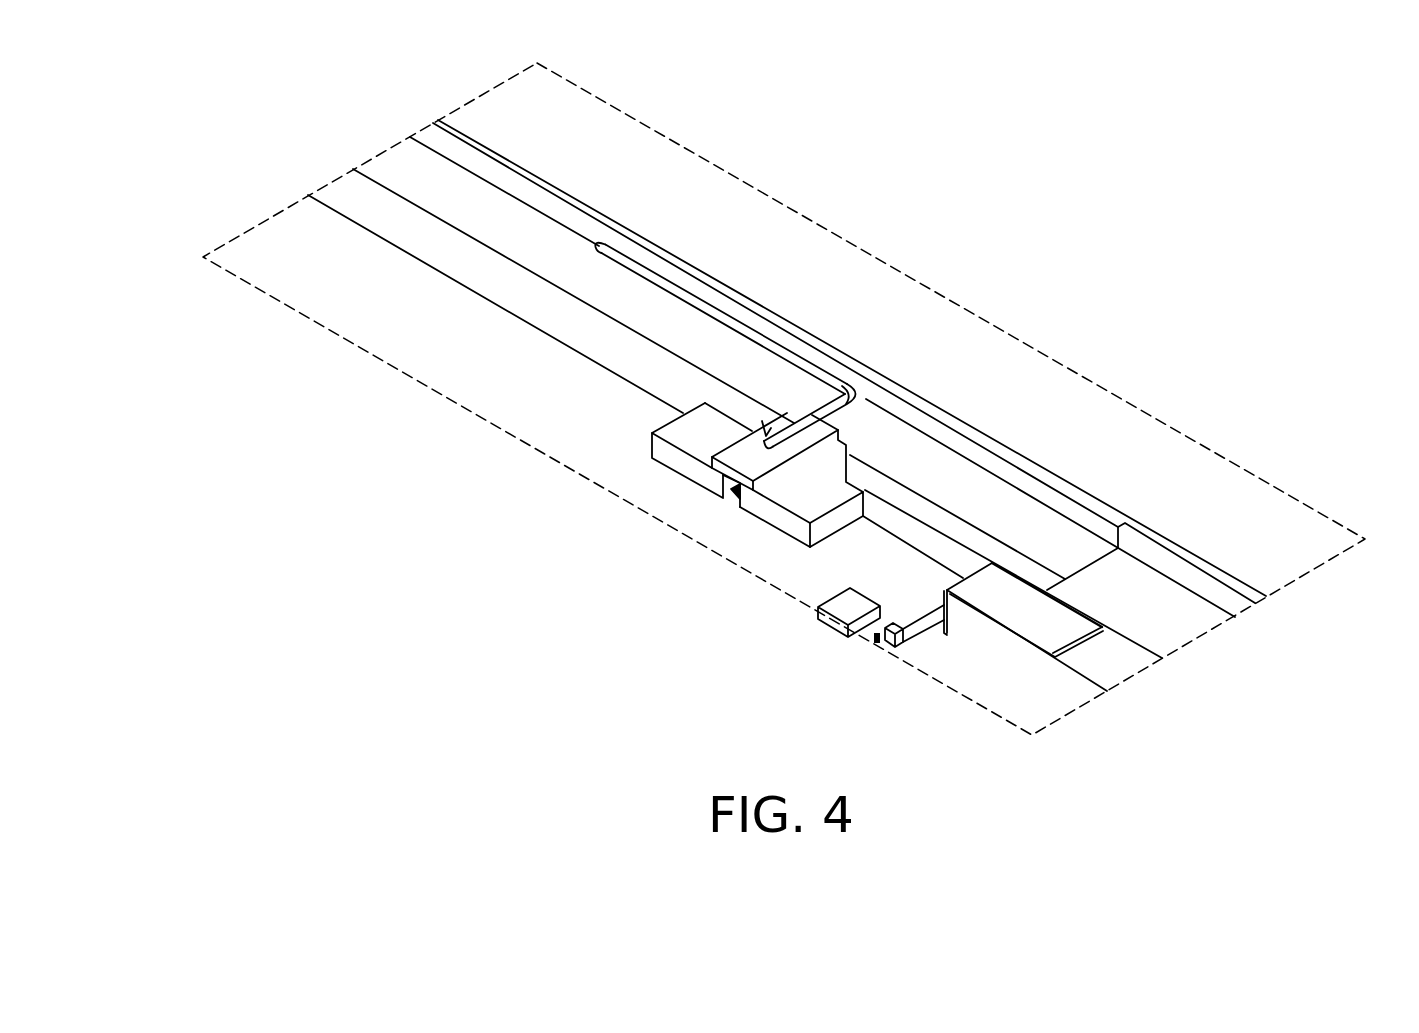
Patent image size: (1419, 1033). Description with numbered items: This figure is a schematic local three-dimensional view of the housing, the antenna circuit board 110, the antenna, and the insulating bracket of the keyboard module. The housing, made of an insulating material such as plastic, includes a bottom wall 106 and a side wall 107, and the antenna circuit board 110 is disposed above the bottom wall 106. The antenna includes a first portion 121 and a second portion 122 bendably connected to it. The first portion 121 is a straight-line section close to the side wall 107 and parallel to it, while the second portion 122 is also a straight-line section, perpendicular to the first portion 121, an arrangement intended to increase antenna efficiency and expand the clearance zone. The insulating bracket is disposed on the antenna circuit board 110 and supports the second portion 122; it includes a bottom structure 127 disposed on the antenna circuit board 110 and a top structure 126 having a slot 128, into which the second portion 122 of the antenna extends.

The antenna circuit board 110 is at (565, 378).
The bottom wall 106 is at (977, 550).
The side wall 107 is at (972, 433).
The first portion 121 is at (715, 315).
The second portion 122 is at (828, 408).
The top structure 126 is at (722, 468).
The bottom structure 127 is at (778, 518).
The slot 128 is at (760, 420).